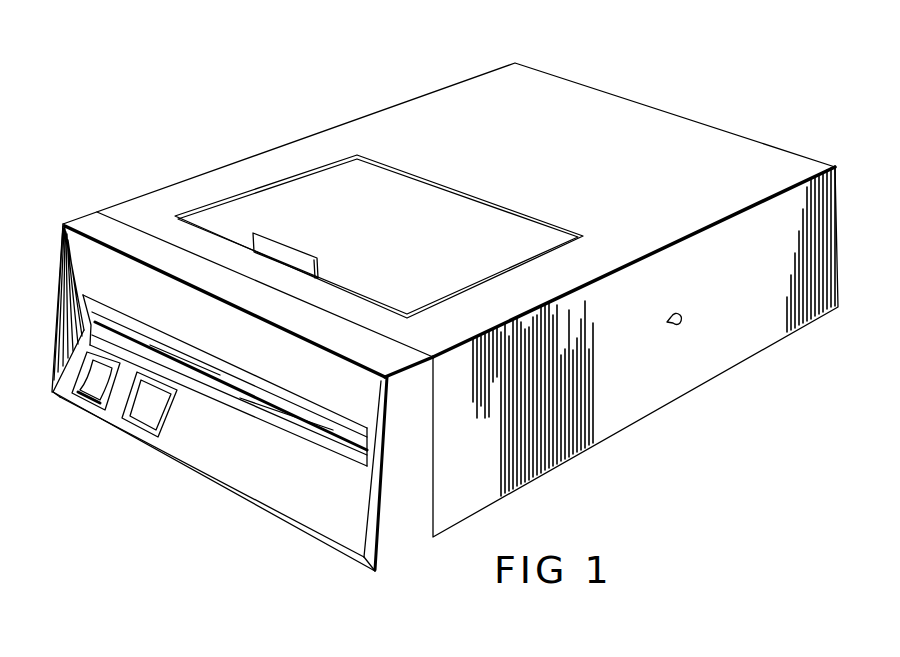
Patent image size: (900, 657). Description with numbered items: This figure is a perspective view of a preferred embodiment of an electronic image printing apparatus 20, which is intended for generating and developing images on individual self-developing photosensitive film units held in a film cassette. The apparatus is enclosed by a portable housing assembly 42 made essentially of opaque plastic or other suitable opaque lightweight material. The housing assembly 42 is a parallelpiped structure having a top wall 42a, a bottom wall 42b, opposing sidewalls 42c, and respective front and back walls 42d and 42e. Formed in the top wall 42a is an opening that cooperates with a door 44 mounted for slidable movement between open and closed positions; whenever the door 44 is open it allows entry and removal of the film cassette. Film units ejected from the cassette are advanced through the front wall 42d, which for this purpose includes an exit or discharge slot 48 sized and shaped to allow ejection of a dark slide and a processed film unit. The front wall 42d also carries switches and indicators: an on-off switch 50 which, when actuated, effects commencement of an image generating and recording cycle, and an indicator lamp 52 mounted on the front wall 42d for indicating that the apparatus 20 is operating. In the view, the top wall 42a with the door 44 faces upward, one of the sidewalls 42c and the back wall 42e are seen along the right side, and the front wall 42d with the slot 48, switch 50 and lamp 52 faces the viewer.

The electronic image printing apparatus 20 is at (292, 111).
The portable housing assembly 42 is at (471, 80).
The top wall 42a is at (690, 133).
The bottom wall 42b is at (741, 362).
The sidewalls 42c is at (135, 195).
The front wall 42d is at (312, 512).
The back wall 42e is at (838, 226).
The door 44 is at (465, 228).
The exit or discharge slot 48 is at (290, 417).
The on-off switch 50 is at (90, 387).
The indicator lamp 52 is at (145, 412).